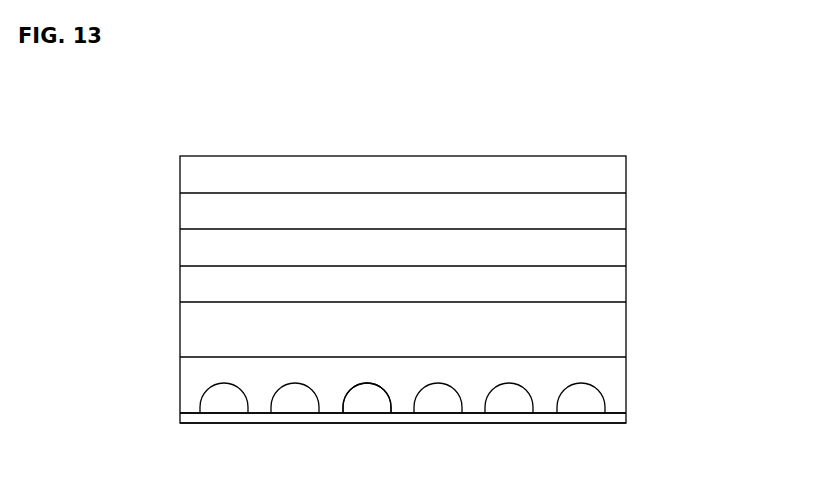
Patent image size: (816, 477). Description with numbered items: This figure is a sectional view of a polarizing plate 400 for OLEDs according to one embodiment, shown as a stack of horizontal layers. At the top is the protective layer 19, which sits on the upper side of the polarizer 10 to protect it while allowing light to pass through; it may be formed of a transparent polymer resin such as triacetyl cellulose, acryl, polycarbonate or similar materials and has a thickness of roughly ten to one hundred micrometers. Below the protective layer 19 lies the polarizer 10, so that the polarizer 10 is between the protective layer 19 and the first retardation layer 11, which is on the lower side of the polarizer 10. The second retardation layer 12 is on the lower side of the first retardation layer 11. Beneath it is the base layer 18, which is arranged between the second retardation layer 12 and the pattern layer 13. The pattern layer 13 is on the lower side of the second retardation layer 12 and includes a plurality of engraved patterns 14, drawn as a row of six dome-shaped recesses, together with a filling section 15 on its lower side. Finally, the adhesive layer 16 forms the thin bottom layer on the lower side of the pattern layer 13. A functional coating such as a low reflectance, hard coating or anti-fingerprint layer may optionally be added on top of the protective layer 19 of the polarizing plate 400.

The polarizing plate 400 is at (604, 128).
The protective layer 19 is at (196, 177).
The polarizer 10 is at (196, 213).
The first retardation layer 11 is at (196, 249).
The second retardation layer 12 is at (196, 285).
The base layer 18 is at (196, 329).
The pattern layer 13 is at (196, 377).
The adhesive layer 16 is at (196, 418).
The engraved patterns 14 is at (229, 383).
The filling section 15 is at (366, 400).